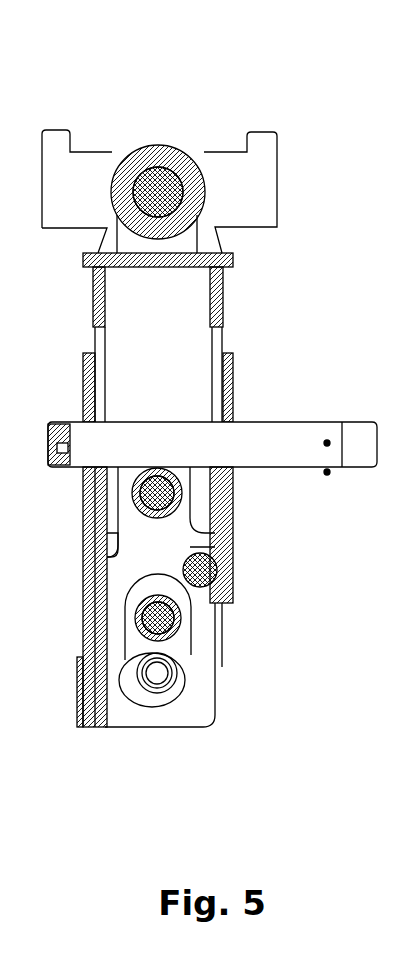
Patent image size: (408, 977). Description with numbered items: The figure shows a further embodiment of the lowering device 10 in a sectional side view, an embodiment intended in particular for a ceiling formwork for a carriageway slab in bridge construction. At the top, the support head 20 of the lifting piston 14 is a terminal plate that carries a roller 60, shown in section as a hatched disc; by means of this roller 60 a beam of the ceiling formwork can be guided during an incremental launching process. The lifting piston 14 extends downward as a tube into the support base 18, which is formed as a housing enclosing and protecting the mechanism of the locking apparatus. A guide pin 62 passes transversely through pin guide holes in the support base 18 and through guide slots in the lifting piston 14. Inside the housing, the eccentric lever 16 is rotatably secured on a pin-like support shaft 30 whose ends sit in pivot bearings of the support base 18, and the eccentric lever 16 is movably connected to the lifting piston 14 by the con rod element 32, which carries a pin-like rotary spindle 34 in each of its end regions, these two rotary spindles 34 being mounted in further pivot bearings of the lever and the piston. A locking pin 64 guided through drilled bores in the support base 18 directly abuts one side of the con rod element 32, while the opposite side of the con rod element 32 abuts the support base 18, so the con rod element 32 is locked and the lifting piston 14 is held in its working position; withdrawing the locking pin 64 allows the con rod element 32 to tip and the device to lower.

The lowering device 10 is at (134, 92).
The lifting piston 14 is at (223, 303).
The eccentric lever 16 is at (137, 645).
The support base 18 is at (230, 390).
The support head 20 is at (235, 195).
The support shaft 30 is at (153, 672).
The con rod element 32 is at (112, 600).
The rotary spindle 34 is at (180, 493).
The roller 60 is at (148, 155).
The guide pin 62 is at (100, 435).
The locking pin 64 is at (217, 575).